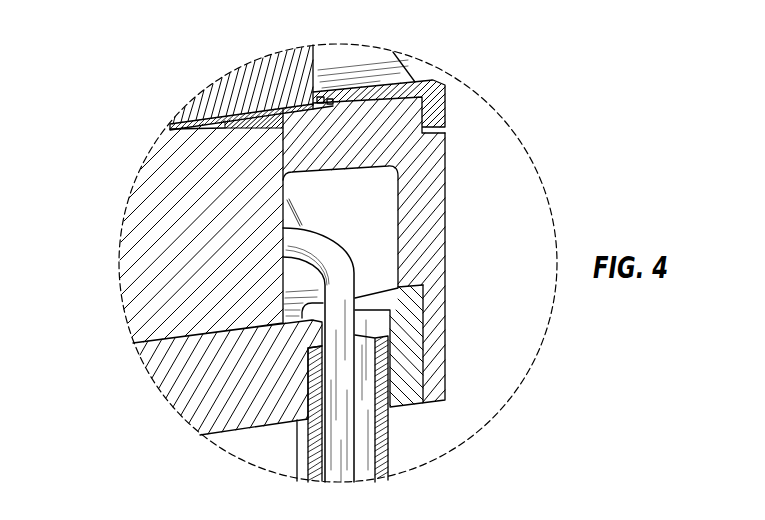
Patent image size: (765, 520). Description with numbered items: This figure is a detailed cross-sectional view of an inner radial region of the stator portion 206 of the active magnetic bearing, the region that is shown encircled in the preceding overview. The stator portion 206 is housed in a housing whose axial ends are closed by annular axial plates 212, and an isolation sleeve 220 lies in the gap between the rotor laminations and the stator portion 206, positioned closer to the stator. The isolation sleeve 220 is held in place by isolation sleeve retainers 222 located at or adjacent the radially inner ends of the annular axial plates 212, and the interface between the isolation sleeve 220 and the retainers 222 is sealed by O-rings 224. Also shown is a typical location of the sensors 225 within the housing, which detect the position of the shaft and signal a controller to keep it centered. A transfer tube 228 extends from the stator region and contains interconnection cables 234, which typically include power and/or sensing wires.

The stator portion 206 is at (140, 198).
The isolation sleeve 220 is at (173, 124).
The sensors 225 is at (243, 115).
The isolation sleeve retainers 222 is at (415, 82).
The O-rings 224 is at (320, 108).
The annular axial plates 212 is at (447, 217).
The interconnection cables 234 is at (358, 298).
The transfer tube 228 is at (390, 440).